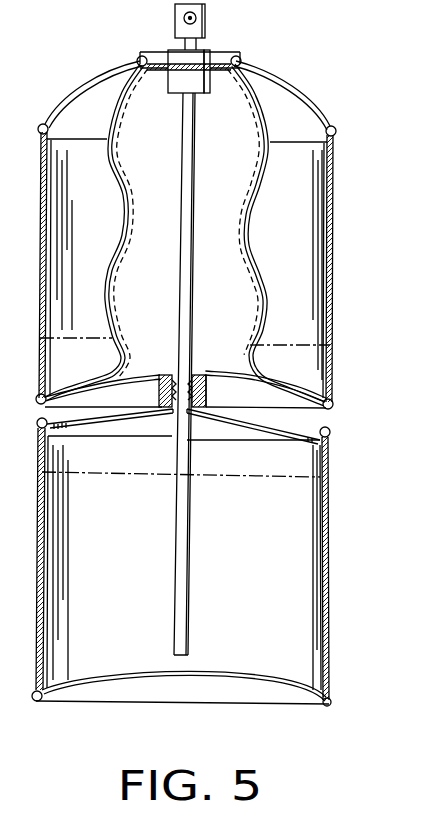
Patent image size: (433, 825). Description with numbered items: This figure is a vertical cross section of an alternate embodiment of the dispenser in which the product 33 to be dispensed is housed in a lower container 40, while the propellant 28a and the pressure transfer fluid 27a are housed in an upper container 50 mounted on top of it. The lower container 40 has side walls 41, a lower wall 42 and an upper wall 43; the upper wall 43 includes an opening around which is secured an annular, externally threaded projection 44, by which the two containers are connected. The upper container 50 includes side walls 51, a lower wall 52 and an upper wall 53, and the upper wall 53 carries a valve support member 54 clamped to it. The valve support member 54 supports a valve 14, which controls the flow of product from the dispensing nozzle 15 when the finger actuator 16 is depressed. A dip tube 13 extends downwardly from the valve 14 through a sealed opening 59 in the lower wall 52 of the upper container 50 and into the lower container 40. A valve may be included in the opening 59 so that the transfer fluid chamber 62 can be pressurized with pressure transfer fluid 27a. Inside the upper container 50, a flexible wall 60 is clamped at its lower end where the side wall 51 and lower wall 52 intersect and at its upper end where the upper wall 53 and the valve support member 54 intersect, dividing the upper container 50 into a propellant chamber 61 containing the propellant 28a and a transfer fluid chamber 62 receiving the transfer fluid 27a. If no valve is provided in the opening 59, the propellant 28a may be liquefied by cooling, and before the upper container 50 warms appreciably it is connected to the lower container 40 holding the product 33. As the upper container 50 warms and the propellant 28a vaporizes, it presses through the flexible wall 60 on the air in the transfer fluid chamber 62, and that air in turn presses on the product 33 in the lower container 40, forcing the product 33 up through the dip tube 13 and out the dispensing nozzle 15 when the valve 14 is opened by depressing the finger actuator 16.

The dip tube 13 is at (189, 266).
The valve 14 is at (200, 88).
The dispensing nozzle 15 is at (190, 18).
The finger actuator 16 is at (175, 14).
The pressure transfer fluid 27a is at (158, 319).
The propellant 28a is at (290, 357).
The product 33 is at (116, 516).
The lower container 40 is at (333, 571).
The side walls 41 is at (331, 498).
The lower wall 42 is at (120, 686).
The upper wall 43 is at (303, 431).
The annular, externally threaded projection 44 is at (207, 398).
The upper container 50 is at (333, 242).
The side walls 51 is at (334, 188).
The lower walls 52 is at (330, 381).
The upper wall 53 is at (292, 92).
The valve support member 54 is at (222, 56).
The sealed opening 59 is at (196, 375).
The flexible wall 60 is at (114, 158).
The propellant chamber 61 is at (300, 279).
The transfer fluid chamber 62 is at (237, 166).